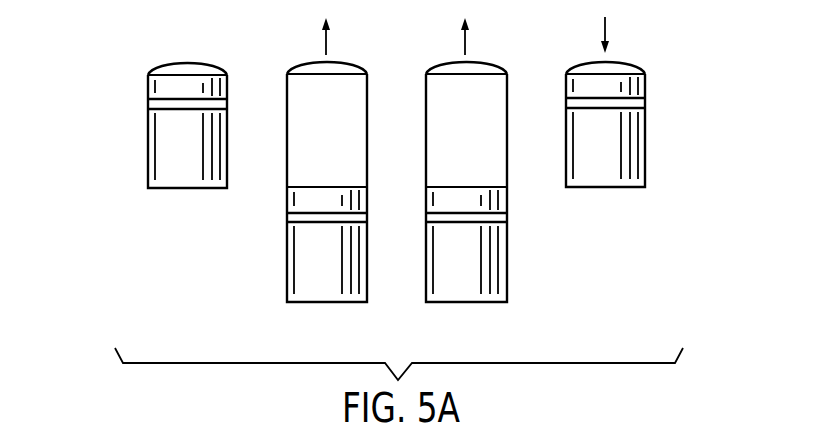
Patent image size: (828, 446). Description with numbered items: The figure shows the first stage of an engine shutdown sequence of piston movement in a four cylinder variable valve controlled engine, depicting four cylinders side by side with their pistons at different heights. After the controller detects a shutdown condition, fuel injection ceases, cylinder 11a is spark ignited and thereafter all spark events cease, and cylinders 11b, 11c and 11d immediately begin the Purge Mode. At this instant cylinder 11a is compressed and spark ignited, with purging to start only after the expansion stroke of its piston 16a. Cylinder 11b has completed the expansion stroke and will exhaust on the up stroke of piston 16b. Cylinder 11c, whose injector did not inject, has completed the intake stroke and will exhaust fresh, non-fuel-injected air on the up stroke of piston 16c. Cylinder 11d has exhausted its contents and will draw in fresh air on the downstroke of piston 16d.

The cylinder 11a is at (136, 142).
The cylinder 11b is at (289, 181).
The cylinder 11c is at (434, 181).
The cylinder 11d is at (650, 130).
The piston 16a is at (182, 172).
The piston 16b is at (321, 286).
The piston 16c is at (460, 286).
The piston 16d is at (600, 171).